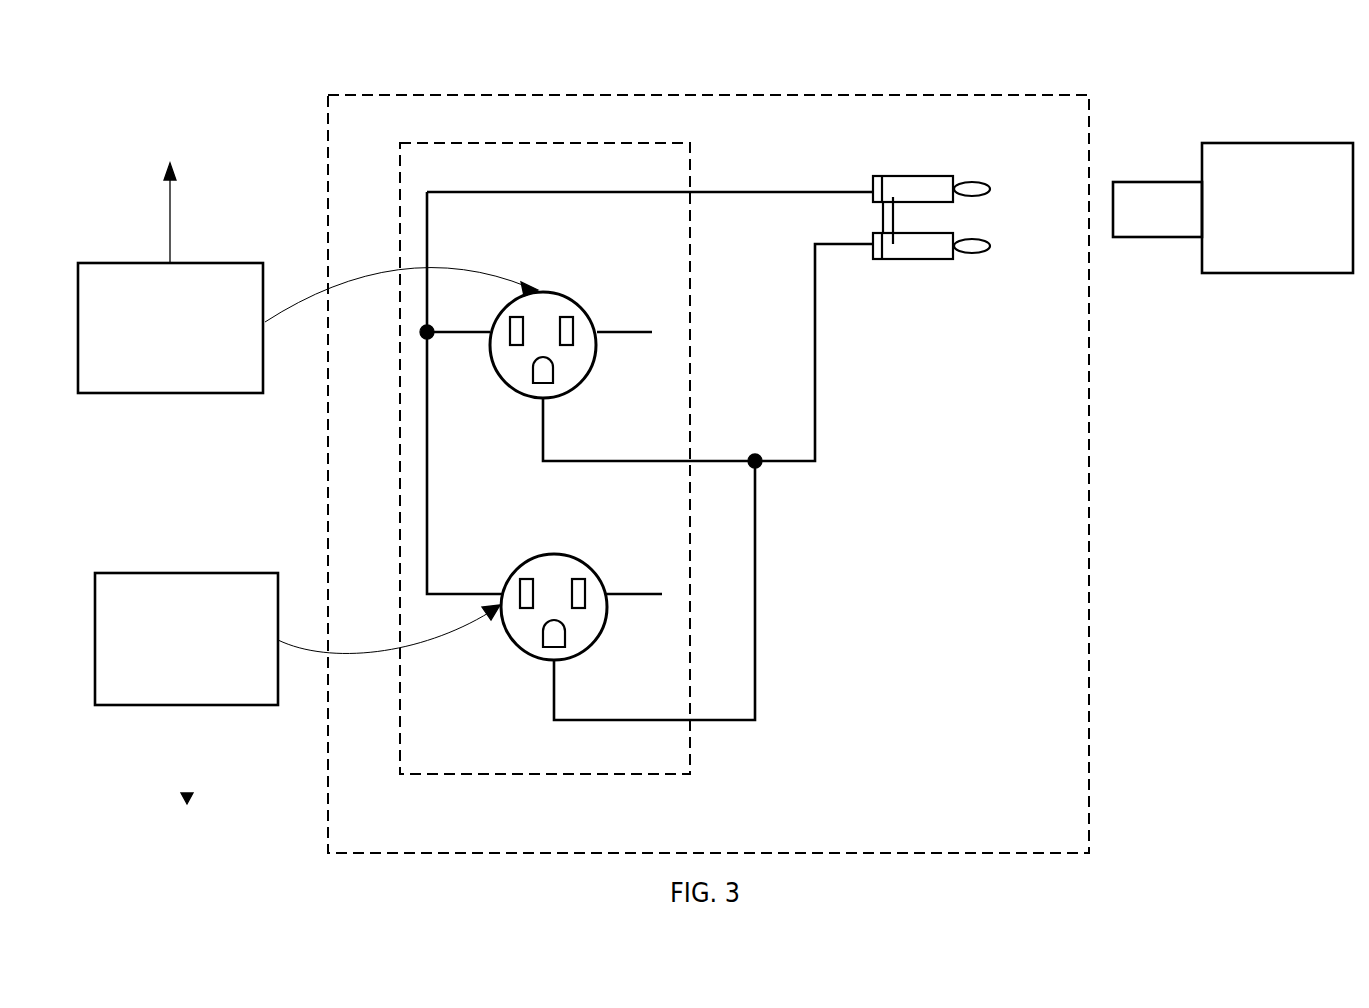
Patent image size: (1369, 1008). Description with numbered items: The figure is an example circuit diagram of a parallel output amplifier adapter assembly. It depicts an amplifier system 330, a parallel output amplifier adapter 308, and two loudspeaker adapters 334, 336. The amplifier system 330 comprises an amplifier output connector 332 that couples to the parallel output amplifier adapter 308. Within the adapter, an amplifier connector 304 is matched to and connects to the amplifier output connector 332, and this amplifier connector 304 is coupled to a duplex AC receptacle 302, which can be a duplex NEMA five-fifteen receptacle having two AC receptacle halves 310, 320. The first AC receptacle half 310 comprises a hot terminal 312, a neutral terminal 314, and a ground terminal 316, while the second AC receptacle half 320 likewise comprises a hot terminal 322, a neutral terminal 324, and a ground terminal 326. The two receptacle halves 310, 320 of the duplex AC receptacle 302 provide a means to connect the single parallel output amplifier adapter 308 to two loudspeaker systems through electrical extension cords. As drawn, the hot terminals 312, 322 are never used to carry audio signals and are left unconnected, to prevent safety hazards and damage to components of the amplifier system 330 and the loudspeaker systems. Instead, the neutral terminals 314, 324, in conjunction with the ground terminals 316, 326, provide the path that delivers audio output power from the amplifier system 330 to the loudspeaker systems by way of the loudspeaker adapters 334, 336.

The duplex AC receptacle 302 is at (614, 155).
The amplifier connector 304 is at (928, 177).
The parallel output amplifier adapter 308 is at (1022, 91).
The AC receptacle half 310 is at (554, 379).
The hot terminal 312 is at (576, 326).
The neutral terminal 314 is at (516, 347).
The ground terminal 316 is at (556, 366).
The AC receptacle half 320 is at (555, 637).
The hot terminal 322 is at (580, 589).
The neutral terminal 324 is at (522, 609).
The ground terminal 326 is at (568, 628).
The amplifier system 330 is at (1318, 143).
The amplifier output connector 332 is at (1147, 182).
The loudspeaker adapter 334 is at (212, 573).
The loudspeaker adapter 336 is at (230, 262).